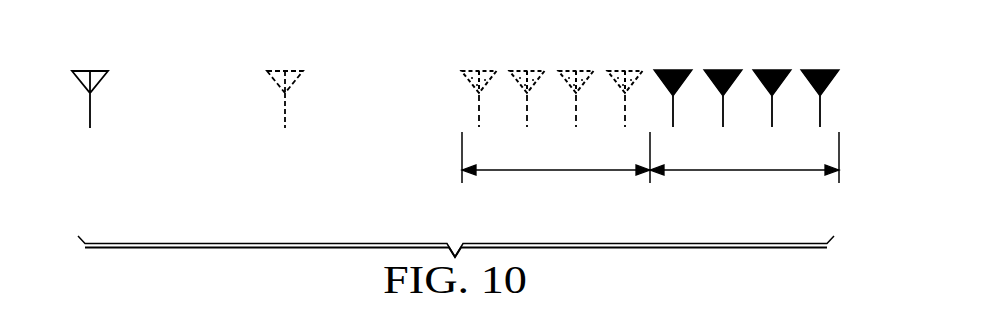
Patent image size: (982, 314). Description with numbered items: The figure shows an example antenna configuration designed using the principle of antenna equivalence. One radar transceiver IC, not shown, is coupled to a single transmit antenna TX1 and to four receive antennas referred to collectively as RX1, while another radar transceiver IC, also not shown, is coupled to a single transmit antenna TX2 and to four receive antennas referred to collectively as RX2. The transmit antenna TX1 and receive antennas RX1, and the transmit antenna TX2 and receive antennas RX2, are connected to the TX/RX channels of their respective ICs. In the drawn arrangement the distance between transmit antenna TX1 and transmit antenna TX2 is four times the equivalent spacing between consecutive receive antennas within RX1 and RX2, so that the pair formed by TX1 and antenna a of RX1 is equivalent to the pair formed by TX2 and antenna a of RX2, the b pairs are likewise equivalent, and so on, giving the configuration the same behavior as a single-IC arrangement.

The transmit antenna TX1 is at (286, 123).
The transmit antenna TX2 is at (91, 123).
The receive antennas RX1 is at (556, 112).
The receive antennas RX2 is at (744, 112).